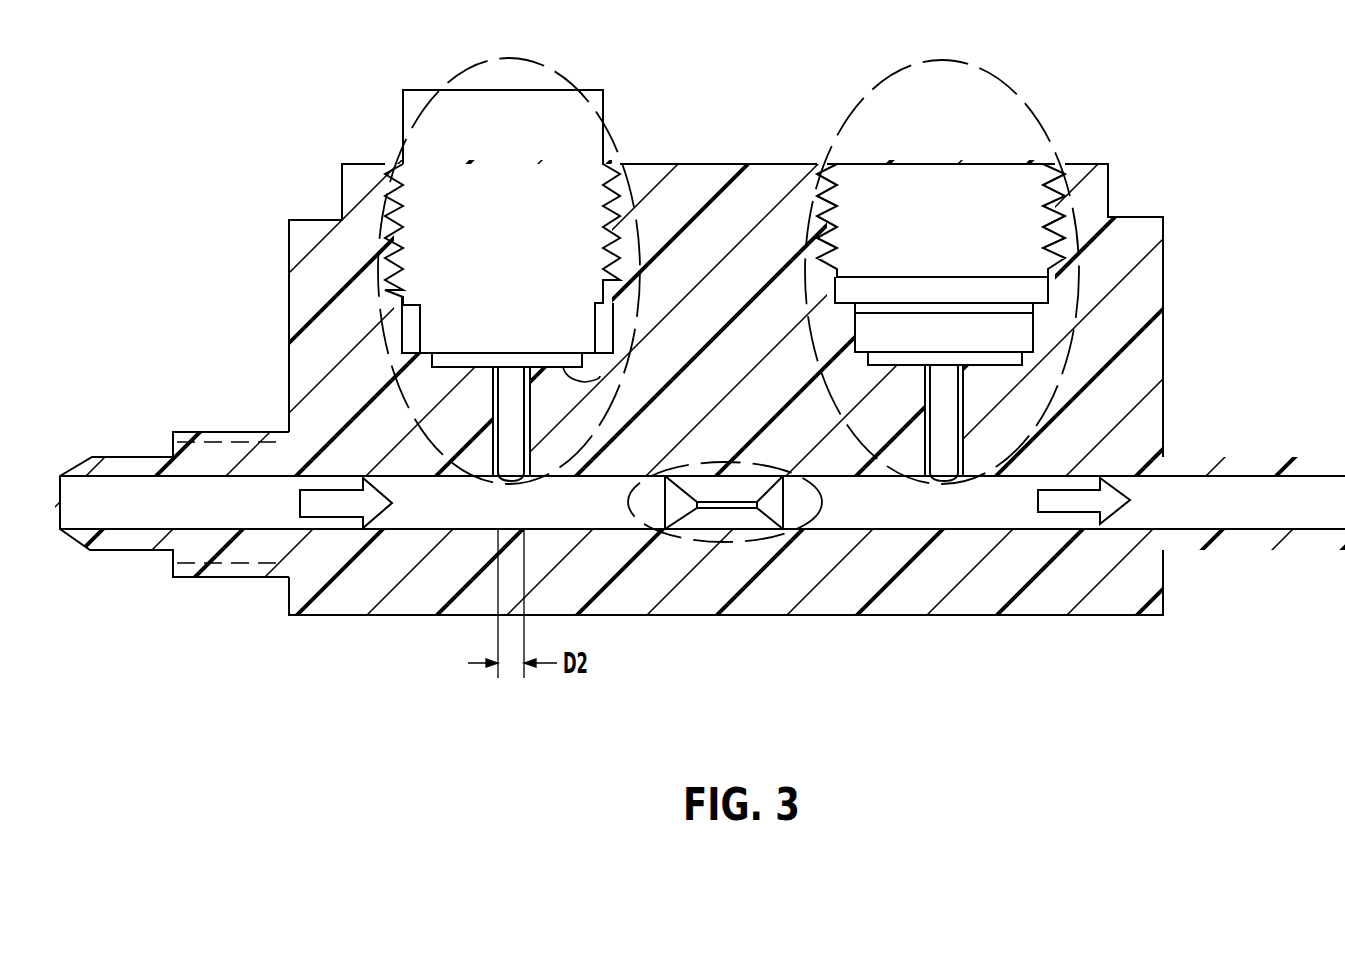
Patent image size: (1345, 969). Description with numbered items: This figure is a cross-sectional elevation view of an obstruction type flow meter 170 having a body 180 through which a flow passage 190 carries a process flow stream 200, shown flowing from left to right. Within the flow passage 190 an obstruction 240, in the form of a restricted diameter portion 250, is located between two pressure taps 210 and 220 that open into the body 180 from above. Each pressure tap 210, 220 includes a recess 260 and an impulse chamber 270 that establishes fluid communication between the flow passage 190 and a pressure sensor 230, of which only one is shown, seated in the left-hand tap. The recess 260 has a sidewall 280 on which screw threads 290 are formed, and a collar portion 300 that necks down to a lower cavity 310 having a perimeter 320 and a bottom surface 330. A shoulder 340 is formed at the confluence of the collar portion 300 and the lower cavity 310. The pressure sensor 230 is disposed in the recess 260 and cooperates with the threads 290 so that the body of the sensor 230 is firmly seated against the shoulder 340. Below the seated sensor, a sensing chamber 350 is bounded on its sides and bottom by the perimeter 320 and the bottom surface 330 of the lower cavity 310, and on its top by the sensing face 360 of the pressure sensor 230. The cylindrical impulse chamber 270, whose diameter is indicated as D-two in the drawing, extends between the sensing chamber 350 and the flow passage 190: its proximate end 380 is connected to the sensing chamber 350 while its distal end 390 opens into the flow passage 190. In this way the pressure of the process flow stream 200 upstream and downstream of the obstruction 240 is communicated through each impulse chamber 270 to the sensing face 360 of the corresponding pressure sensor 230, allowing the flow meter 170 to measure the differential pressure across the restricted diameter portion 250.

The obstruction type flow meter 170 is at (298, 113).
The body 180 is at (289, 220).
The flow passage 190 is at (208, 493).
The process flow stream 200 is at (313, 505).
The pressure tap 210 is at (858, 93).
The pressure tap 220 is at (456, 76).
The pressure sensor 230 is at (519, 235).
The obstruction 240 is at (700, 543).
The restricted diameter portion 250 is at (720, 510).
The recess 260 is at (993, 193).
The impulse chamber 270 is at (953, 445).
The sidewall 280 is at (833, 213).
The screw threads 290 is at (1054, 211).
The collar portion 300 is at (1033, 322).
The lower cavity 310 is at (1022, 356).
The perimeter 320 is at (428, 357).
The bottom surface 330 is at (452, 367).
The shoulder 340 is at (862, 355).
The sensing chamber 350 is at (525, 480).
The sensing face 360 is at (600, 378).
The proximate end 380 is at (498, 370).
The distal end 390 is at (500, 483).